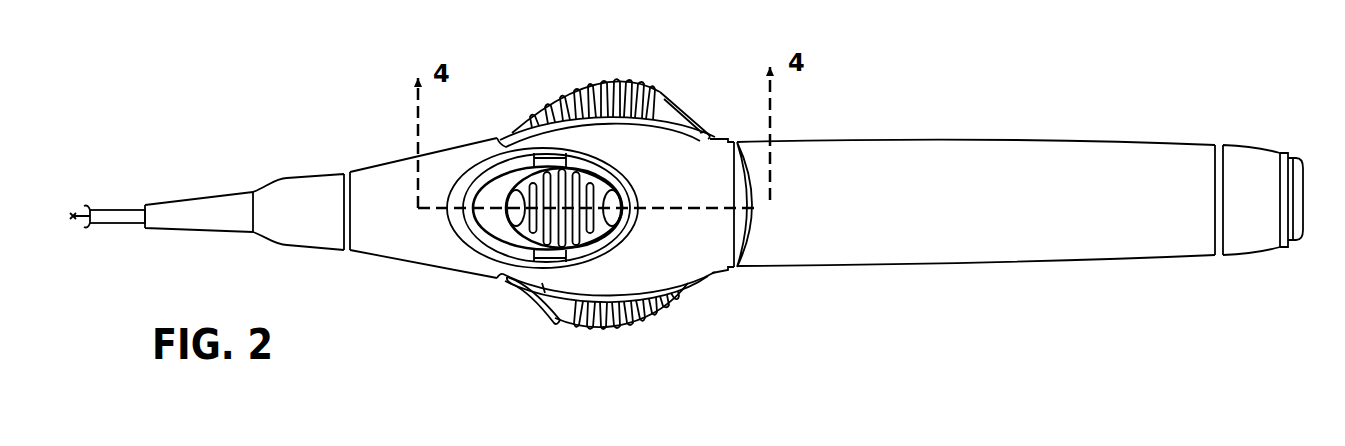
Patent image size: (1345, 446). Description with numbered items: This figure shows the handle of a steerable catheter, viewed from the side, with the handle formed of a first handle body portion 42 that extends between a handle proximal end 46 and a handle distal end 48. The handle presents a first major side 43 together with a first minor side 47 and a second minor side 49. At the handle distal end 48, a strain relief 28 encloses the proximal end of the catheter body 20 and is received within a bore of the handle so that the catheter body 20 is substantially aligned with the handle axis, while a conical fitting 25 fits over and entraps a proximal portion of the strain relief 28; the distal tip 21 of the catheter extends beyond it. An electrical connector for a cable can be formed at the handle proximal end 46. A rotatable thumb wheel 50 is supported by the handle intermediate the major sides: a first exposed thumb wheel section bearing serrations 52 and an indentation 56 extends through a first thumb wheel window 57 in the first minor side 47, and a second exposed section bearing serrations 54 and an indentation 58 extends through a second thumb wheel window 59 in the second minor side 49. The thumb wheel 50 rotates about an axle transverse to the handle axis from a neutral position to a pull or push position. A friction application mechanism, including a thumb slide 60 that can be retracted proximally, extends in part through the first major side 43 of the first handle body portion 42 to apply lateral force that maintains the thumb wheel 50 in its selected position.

The catheter body 20 is at (114, 195).
The tip 21 is at (75, 210).
The conical fitting 25 is at (308, 192).
The strain relief 28 is at (179, 218).
The first handle body portion 42 is at (991, 127).
The first major side 43 is at (1077, 190).
The handle proximal end 46 is at (1287, 259).
The first minor side 47 is at (1143, 266).
The handle distal end 48 is at (252, 182).
The second minor side 49 is at (845, 138).
The thumb wheel 50 is at (684, 79).
The serrations 52 is at (651, 323).
The serrations 54 is at (683, 120).
The indentation 56 is at (539, 307).
The first thumb wheel window 57 is at (612, 300).
The indentation 58 is at (546, 107).
The second thumb wheel window 59 is at (506, 139).
The thumb slide 60 is at (489, 249).